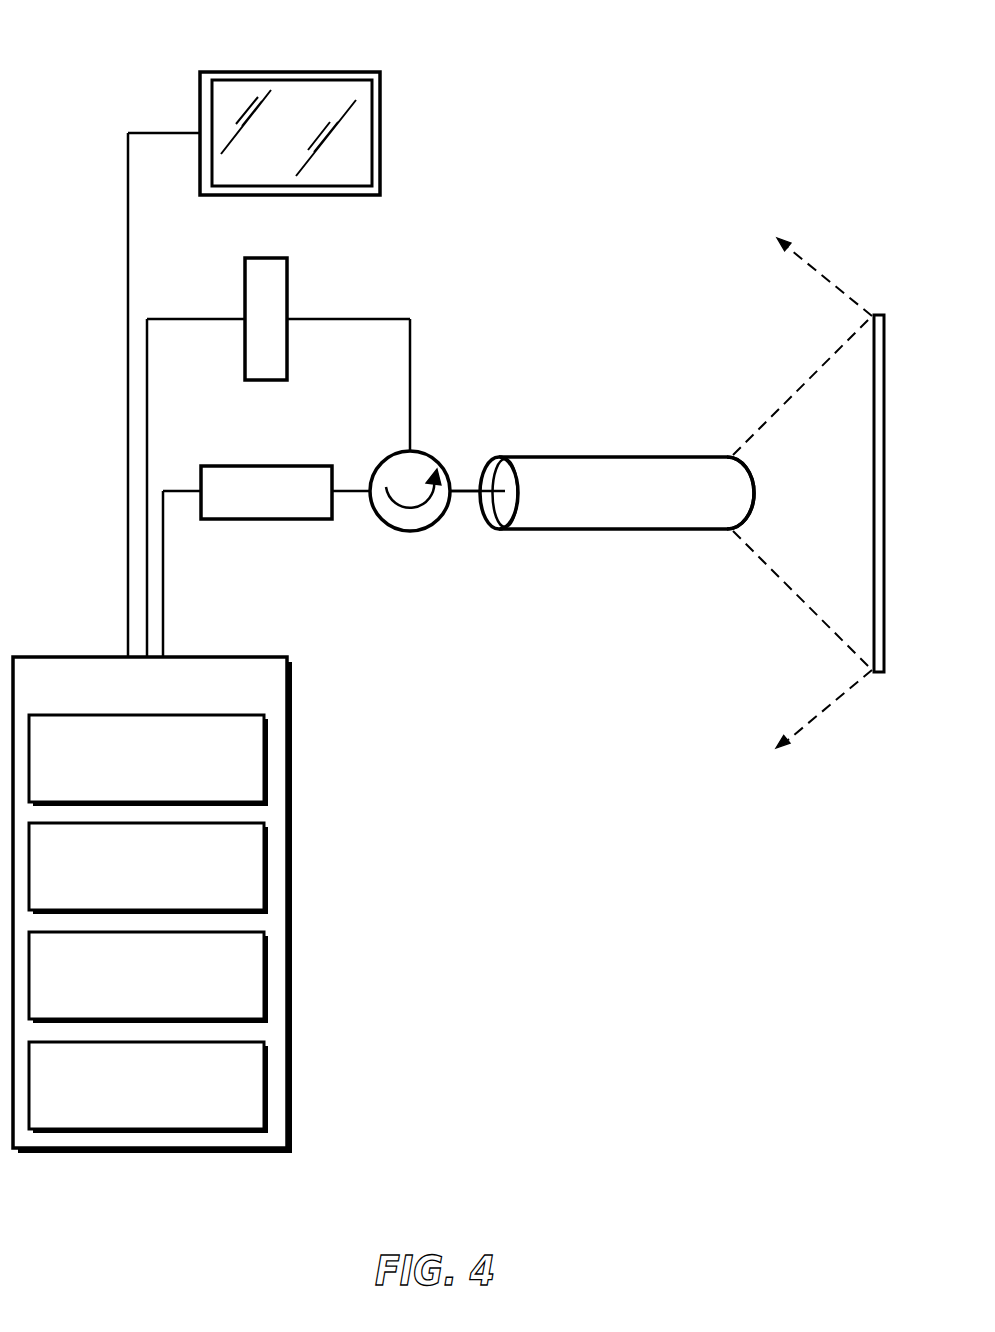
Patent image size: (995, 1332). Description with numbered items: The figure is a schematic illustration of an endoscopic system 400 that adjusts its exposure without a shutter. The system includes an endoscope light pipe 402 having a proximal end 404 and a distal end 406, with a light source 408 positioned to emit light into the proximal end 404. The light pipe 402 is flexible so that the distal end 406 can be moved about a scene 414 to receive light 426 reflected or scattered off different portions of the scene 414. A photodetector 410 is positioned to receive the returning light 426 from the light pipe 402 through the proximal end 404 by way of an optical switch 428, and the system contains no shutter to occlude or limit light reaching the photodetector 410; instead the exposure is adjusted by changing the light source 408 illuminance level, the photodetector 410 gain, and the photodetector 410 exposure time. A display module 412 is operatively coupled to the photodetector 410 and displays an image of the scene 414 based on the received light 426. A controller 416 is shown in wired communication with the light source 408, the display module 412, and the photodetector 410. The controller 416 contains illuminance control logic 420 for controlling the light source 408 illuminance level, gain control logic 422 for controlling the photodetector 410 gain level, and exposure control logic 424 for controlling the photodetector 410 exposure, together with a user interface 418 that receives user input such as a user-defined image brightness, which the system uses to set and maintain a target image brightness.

The endoscopic system 400 is at (88, 87).
The endoscope light pipe 402 is at (619, 425).
The proximal end 404 is at (476, 456).
The distal end 406 is at (768, 480).
The light source 408 is at (332, 477).
The photodetector 410 is at (287, 298).
The display module 412 is at (381, 118).
The scene 414 is at (856, 635).
The controller 416 is at (304, 668).
The user interface 418 is at (268, 761).
The illuminance control logic 420 is at (268, 868).
The gain control logic 422 is at (268, 971).
The exposure control logic 424 is at (268, 1082).
The light 426 is at (772, 605).
The optical switch 428 is at (421, 532).